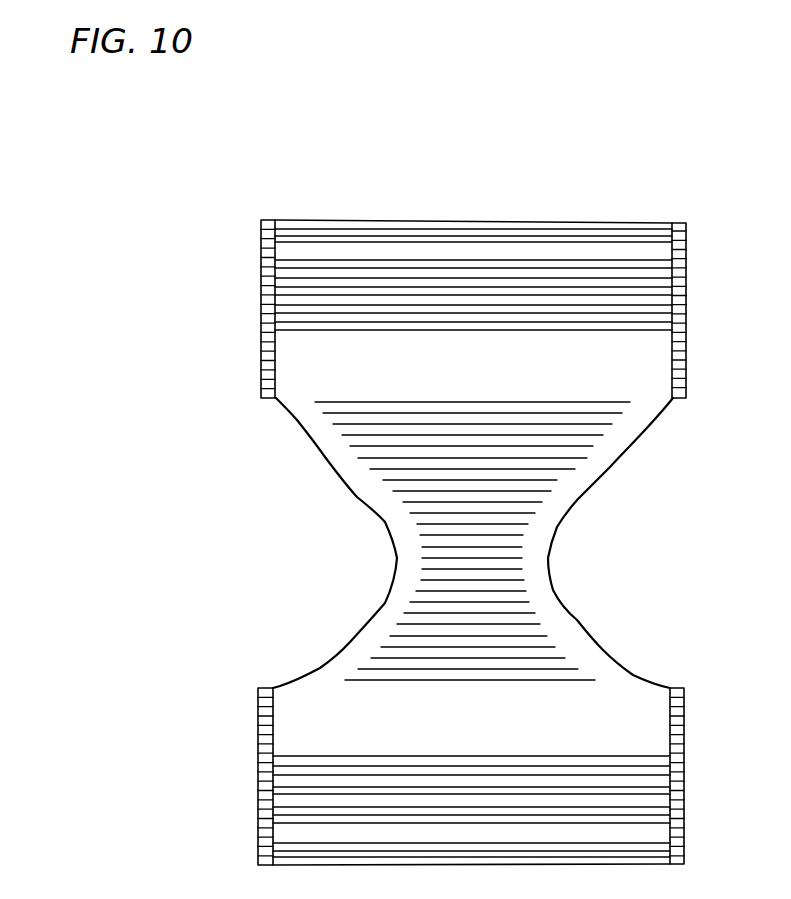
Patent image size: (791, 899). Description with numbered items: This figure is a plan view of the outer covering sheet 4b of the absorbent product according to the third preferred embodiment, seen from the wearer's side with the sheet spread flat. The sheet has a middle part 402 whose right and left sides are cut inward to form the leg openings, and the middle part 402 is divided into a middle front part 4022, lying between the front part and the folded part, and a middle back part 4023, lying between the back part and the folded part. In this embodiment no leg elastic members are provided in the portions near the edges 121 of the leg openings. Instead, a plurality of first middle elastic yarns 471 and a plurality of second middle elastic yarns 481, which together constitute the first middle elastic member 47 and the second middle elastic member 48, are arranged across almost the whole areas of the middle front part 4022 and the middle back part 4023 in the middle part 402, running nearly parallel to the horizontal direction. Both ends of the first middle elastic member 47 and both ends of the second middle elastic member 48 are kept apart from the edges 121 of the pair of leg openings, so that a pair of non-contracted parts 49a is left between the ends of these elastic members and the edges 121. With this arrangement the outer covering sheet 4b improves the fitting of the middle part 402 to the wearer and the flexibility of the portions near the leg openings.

The outer covering sheet 4b is at (263, 198).
The second middle elastic member 48 is at (176, 420).
The second middle elastic yarns 481 is at (466, 458).
The non-contracted parts 49a is at (368, 507).
The edges of leg openings 121 is at (312, 666).
The middle part 402 is at (284, 559).
The middle back part 4023 is at (460, 525).
The middle front part 4022 is at (466, 604).
The first middle elastic member 47 is at (170, 737).
The first middle elastic yarns 471 is at (466, 623).